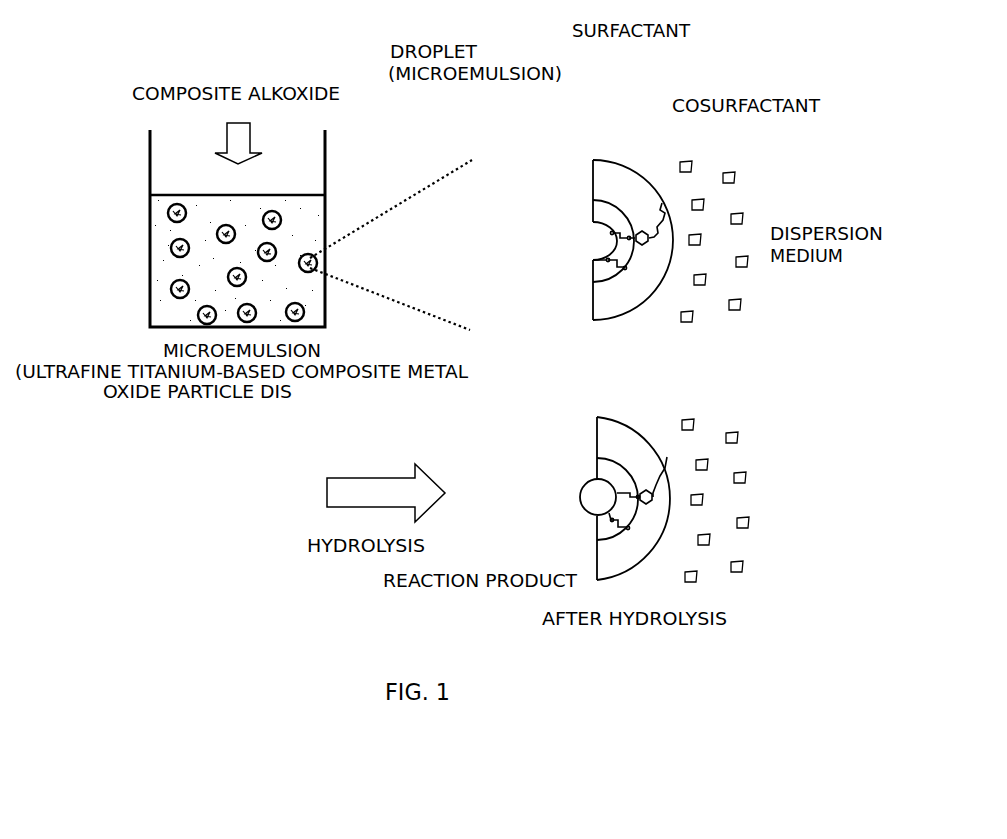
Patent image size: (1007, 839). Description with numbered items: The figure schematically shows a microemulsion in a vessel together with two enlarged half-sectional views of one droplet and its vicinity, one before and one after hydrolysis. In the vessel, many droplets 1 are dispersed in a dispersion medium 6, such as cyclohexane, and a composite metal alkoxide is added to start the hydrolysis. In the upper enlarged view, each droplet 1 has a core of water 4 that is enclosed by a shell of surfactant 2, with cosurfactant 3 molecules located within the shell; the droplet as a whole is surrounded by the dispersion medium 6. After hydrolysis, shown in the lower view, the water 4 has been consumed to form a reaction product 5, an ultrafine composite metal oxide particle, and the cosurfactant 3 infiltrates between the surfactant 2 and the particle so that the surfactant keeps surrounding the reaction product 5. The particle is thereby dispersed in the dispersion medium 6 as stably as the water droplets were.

The droplet 1 is at (168, 213).
The surfactant 2 is at (603, 175).
The cosurfactant 3 is at (617, 222).
The water 4 is at (598, 240).
The reaction product 5 is at (582, 505).
The dispersion medium 6 is at (178, 267).